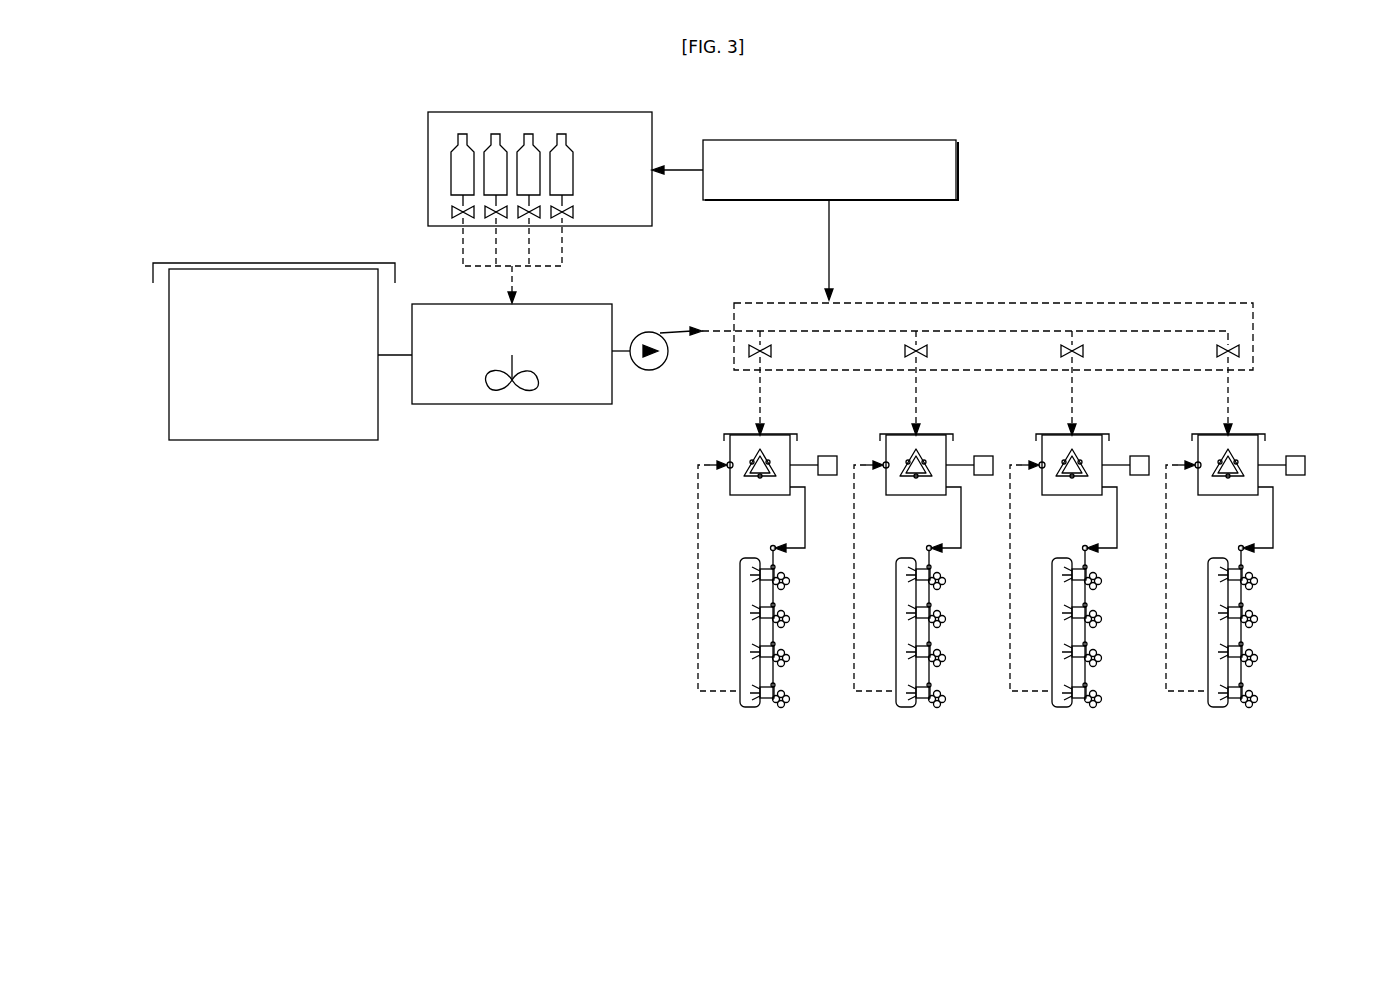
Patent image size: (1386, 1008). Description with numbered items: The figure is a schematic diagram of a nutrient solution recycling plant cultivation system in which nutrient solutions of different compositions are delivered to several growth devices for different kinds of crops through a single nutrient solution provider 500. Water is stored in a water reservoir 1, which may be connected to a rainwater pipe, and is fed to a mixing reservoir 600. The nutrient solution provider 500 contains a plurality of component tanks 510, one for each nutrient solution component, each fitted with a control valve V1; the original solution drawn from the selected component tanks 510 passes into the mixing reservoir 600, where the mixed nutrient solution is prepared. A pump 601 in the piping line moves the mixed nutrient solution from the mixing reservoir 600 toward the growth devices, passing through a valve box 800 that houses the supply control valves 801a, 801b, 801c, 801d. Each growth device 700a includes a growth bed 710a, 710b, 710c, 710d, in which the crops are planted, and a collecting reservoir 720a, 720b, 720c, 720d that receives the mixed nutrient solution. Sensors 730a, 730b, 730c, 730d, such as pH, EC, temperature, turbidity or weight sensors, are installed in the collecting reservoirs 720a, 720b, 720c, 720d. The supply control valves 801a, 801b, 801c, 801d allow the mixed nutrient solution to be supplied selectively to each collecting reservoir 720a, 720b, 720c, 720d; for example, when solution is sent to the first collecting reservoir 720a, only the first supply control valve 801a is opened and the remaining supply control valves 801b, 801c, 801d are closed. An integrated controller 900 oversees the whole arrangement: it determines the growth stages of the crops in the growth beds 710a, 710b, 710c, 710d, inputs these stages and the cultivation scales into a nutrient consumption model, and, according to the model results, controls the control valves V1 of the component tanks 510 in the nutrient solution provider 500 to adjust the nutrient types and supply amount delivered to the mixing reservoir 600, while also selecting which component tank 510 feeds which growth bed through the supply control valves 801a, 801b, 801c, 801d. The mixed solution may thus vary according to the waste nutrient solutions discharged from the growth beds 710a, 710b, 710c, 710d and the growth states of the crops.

The water reservoir 1 is at (275, 440).
The nutrient solution provider 500 is at (540, 112).
The component tanks 510 is at (463, 132).
The control valves V1 is at (493, 218).
The mixing reservoir 600 is at (500, 404).
The pump 601 is at (649, 370).
The integrated controller 900 is at (830, 140).
The valve box 800 is at (965, 303).
The first supply control valve 801a is at (751, 357).
The supply control valve 801b is at (907, 357).
The supply control valve 801c is at (1063, 357).
The supply control valve 801d is at (1219, 357).
The first collecting reservoir 720a is at (728, 450).
The collecting reservoir 720b is at (884, 450).
The collecting reservoir 720c is at (1040, 450).
The collecting reservoir 720d is at (1196, 450).
The sensor 730a is at (828, 475).
The sensor 730b is at (984, 475).
The sensor 730c is at (1140, 475).
The sensor 730d is at (1296, 475).
The growth bed 710a is at (750, 707).
The growth bed 710b is at (906, 707).
The growth bed 710c is at (1062, 707).
The growth bed 710d is at (1218, 707).
The growth device 700a is at (731, 770).